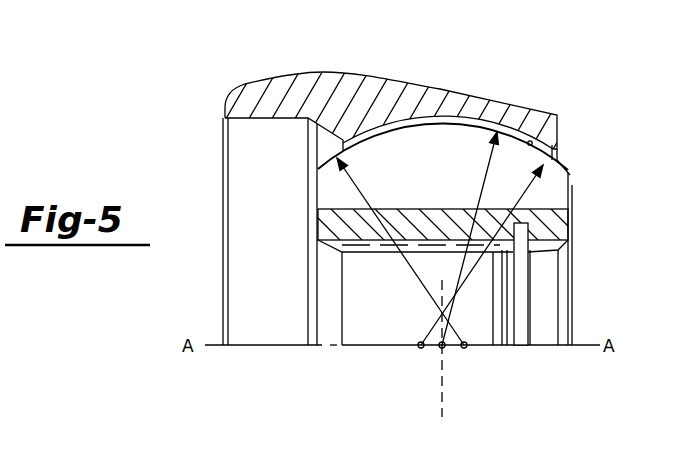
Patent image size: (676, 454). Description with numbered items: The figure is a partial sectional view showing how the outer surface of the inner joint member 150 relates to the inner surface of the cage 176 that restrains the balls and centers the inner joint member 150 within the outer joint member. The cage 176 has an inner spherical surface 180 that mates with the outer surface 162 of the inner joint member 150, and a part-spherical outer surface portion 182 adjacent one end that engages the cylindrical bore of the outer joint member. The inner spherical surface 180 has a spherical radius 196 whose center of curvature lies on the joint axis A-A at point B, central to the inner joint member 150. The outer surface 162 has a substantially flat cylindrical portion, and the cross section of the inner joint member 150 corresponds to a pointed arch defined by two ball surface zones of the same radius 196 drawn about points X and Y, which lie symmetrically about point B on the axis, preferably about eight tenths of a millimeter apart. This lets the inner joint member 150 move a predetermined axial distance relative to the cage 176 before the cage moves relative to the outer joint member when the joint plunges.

The inner joint member 150 is at (570, 212).
The outer surface 162 is at (570, 168).
The cage 176 is at (432, 90).
The inner spherical surface 180 is at (558, 115).
The part-spherical outer surface portion 182 is at (343, 72).
The radius 196 is at (363, 190).